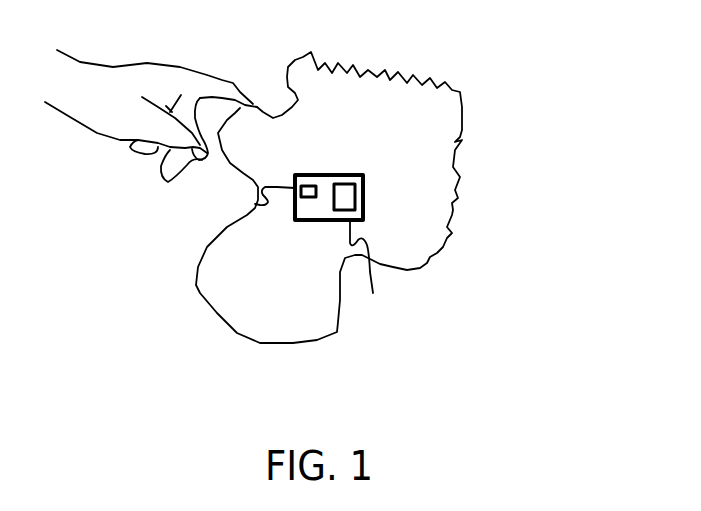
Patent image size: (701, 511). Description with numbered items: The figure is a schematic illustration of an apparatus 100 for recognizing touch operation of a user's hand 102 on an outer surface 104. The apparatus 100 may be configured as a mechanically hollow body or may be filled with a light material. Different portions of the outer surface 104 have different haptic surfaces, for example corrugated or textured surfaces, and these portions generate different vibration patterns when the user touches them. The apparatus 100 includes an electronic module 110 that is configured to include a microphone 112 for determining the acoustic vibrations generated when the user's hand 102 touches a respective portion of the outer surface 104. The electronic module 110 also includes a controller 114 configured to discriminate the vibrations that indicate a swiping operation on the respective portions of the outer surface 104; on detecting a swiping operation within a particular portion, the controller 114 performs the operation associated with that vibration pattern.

The apparatus 100 is at (563, 96).
The user's hand 102 is at (234, 83).
The outer surface 104 is at (427, 151).
The electronic module 110 is at (365, 191).
The microphone 112 is at (255, 204).
The controller 114 is at (374, 273).